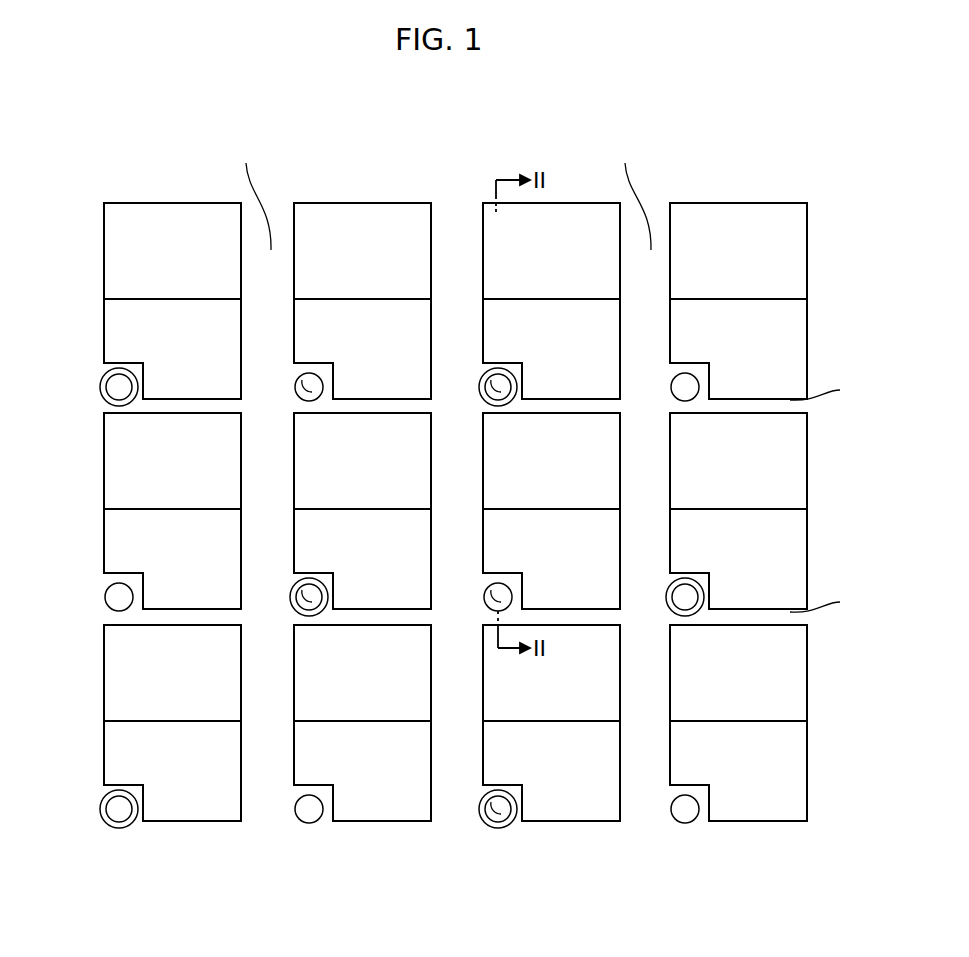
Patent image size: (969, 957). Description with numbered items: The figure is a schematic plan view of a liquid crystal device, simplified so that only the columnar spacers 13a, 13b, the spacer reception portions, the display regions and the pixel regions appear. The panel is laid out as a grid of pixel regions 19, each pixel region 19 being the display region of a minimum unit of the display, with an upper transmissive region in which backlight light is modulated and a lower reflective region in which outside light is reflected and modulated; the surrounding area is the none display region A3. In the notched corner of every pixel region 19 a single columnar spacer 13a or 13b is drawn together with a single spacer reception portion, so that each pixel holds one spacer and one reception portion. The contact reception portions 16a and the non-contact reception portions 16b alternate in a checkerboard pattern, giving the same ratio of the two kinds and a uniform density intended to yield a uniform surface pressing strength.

The pixel region 19 is at (367, 186).
The columnar spacer 13a is at (305, 390).
The columnar spacer 13b is at (115, 390).
The contact reception portion 16a is at (299, 378).
The non-contact reception portion 16b is at (484, 375).
The none display region A3 is at (552, 374).